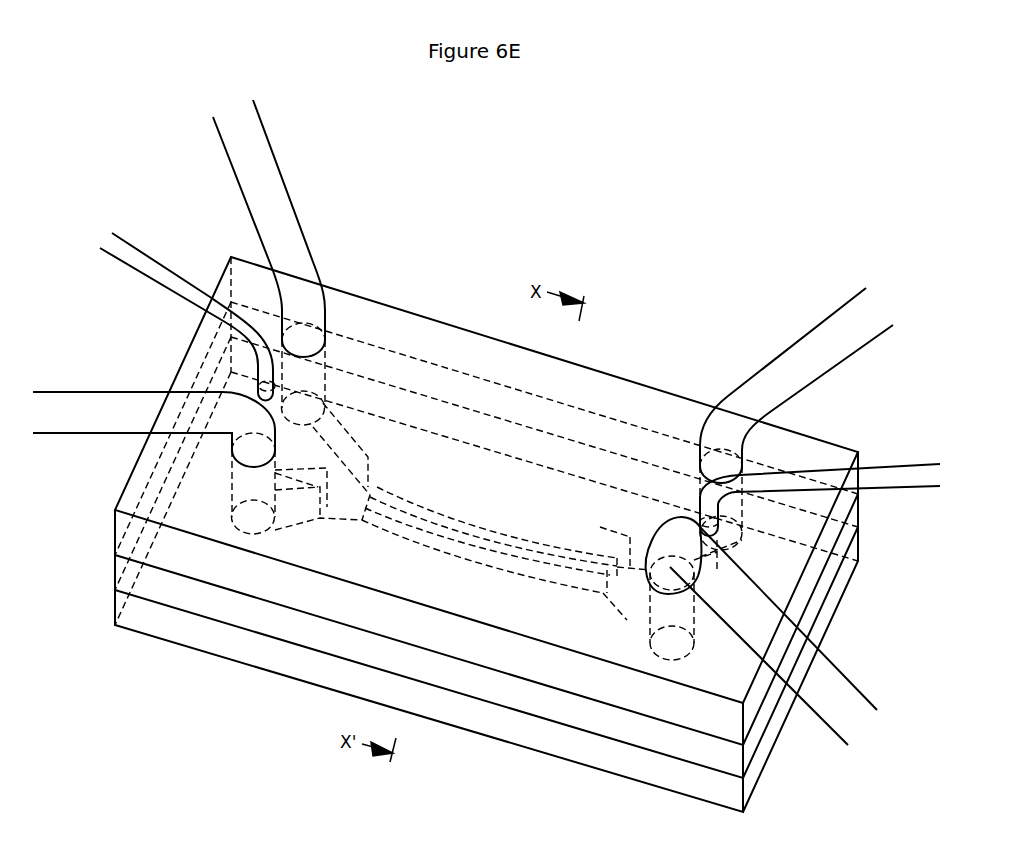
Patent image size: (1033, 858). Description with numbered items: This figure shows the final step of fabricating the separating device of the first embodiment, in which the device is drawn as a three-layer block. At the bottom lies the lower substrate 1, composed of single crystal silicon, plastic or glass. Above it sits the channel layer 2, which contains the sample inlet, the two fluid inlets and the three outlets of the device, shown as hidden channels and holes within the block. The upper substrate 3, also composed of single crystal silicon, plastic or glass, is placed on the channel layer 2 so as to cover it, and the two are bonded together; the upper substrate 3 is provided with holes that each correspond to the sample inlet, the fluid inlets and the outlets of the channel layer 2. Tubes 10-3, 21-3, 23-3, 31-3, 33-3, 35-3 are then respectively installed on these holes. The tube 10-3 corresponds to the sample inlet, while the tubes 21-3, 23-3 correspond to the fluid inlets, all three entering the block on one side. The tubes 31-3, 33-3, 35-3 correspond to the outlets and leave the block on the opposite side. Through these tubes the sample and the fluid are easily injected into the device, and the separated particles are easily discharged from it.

The lower substrate 1 is at (307, 672).
The channel layer 2 is at (253, 618).
The upper substrate 3 is at (427, 322).
The tube 10-3 is at (133, 247).
The tube 21-3 is at (253, 147).
The tube 23-3 is at (96, 413).
The tube 31-3 is at (832, 330).
The tube 33-3 is at (822, 700).
The tube 35-3 is at (873, 477).